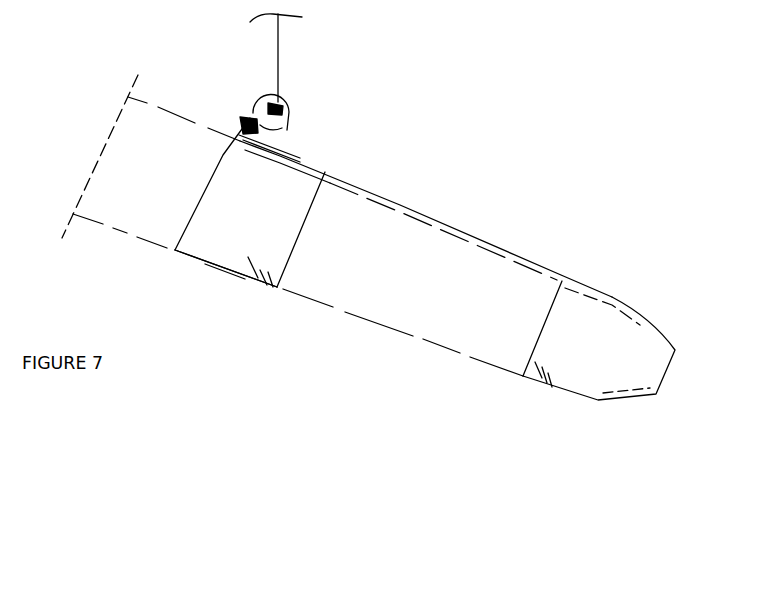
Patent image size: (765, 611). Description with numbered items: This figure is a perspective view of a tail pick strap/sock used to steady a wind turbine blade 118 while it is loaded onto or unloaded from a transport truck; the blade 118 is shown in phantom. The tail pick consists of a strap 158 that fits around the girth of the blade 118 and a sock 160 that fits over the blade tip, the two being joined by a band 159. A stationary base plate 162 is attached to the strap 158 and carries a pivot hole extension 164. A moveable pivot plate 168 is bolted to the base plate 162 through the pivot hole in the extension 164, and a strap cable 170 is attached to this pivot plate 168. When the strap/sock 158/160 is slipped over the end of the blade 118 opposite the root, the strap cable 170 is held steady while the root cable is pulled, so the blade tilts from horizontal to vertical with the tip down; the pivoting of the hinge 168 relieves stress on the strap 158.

The elongated body 118 is at (333, 293).
The strap 158 is at (290, 178).
The band 159 is at (410, 212).
The sock 160 is at (578, 308).
The stationary base plate 162 is at (282, 146).
The pivot hole extension 164 is at (255, 122).
The moveable pivot plate 168 is at (290, 114).
The strap cable 170 is at (278, 60).